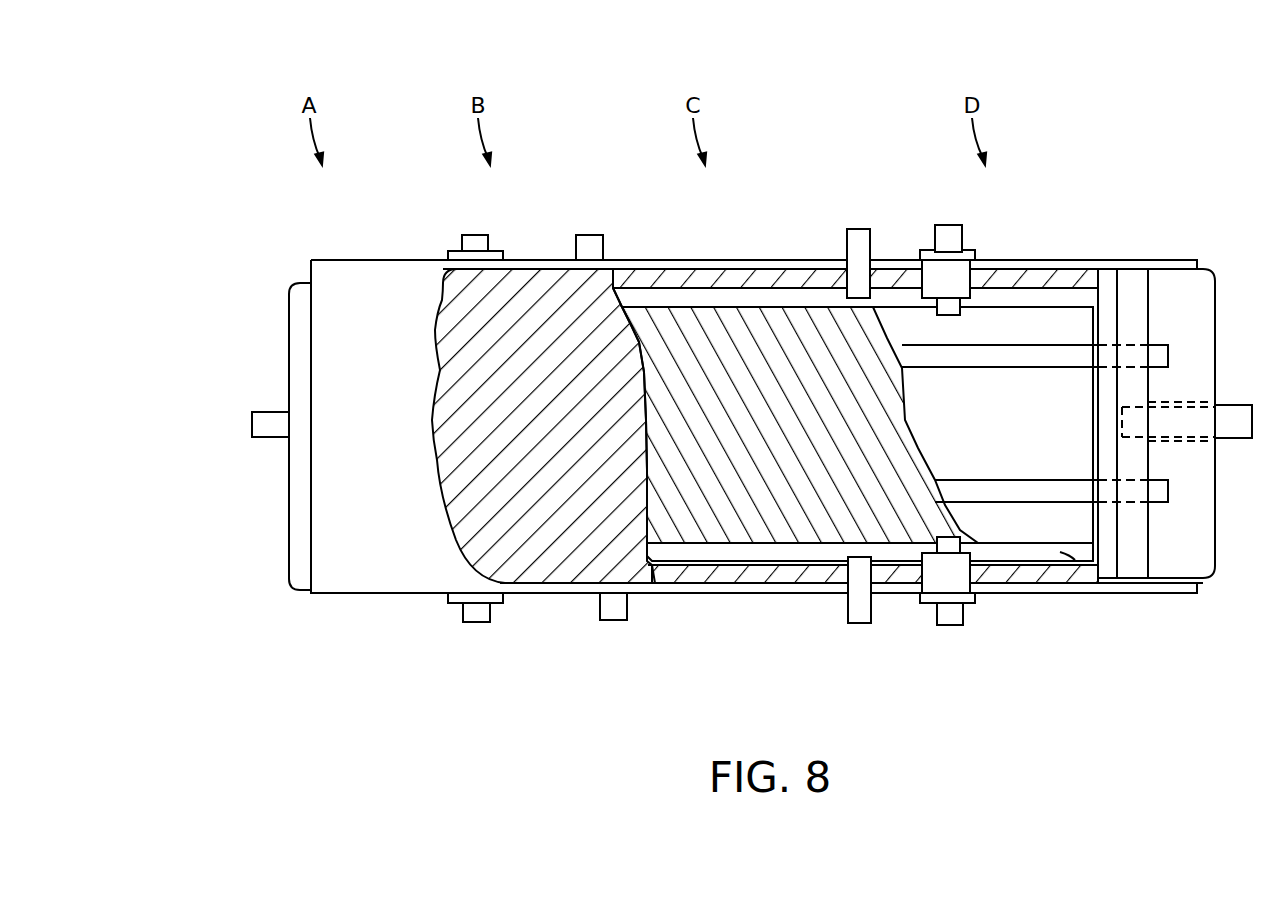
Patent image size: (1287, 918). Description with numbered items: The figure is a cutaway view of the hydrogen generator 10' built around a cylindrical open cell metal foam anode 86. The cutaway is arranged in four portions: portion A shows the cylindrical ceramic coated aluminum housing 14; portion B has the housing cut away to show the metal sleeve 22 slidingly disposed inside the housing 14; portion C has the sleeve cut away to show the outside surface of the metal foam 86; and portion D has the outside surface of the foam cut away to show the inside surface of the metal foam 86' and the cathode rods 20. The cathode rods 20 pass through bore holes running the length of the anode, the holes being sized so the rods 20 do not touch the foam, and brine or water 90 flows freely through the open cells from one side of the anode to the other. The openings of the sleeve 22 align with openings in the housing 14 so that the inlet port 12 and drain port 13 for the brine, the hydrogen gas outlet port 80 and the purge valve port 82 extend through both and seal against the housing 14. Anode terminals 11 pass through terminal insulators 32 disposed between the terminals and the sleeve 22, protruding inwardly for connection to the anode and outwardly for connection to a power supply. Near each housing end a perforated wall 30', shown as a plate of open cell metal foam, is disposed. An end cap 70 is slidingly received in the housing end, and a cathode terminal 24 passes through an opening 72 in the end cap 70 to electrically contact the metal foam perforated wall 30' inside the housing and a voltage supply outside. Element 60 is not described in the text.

The hydrogen generator 10' is at (1183, 44).
The anode terminal 11 is at (478, 240).
The inlet port 12 is at (618, 610).
The drain port 13 is at (857, 618).
The housing 14 is at (372, 585).
The cathode rods 20 is at (1050, 360).
The metal sleeve 22 is at (458, 542).
The cathode terminal 24 is at (262, 438).
The perforated wall 30' is at (1199, 429).
The terminal insulators 32 is at (500, 247).
The end plate 60 is at (1106, 289).
The end cap 70 is at (300, 545).
The opening 72 is at (1200, 440).
The hydrogen gas outlet port 80 is at (590, 245).
The purge valve port 82 is at (857, 240).
The metal foam anode 86 is at (853, 390).
The inside surface of the metal foam 86' is at (972, 428).
The brine or water 90 is at (1062, 552).